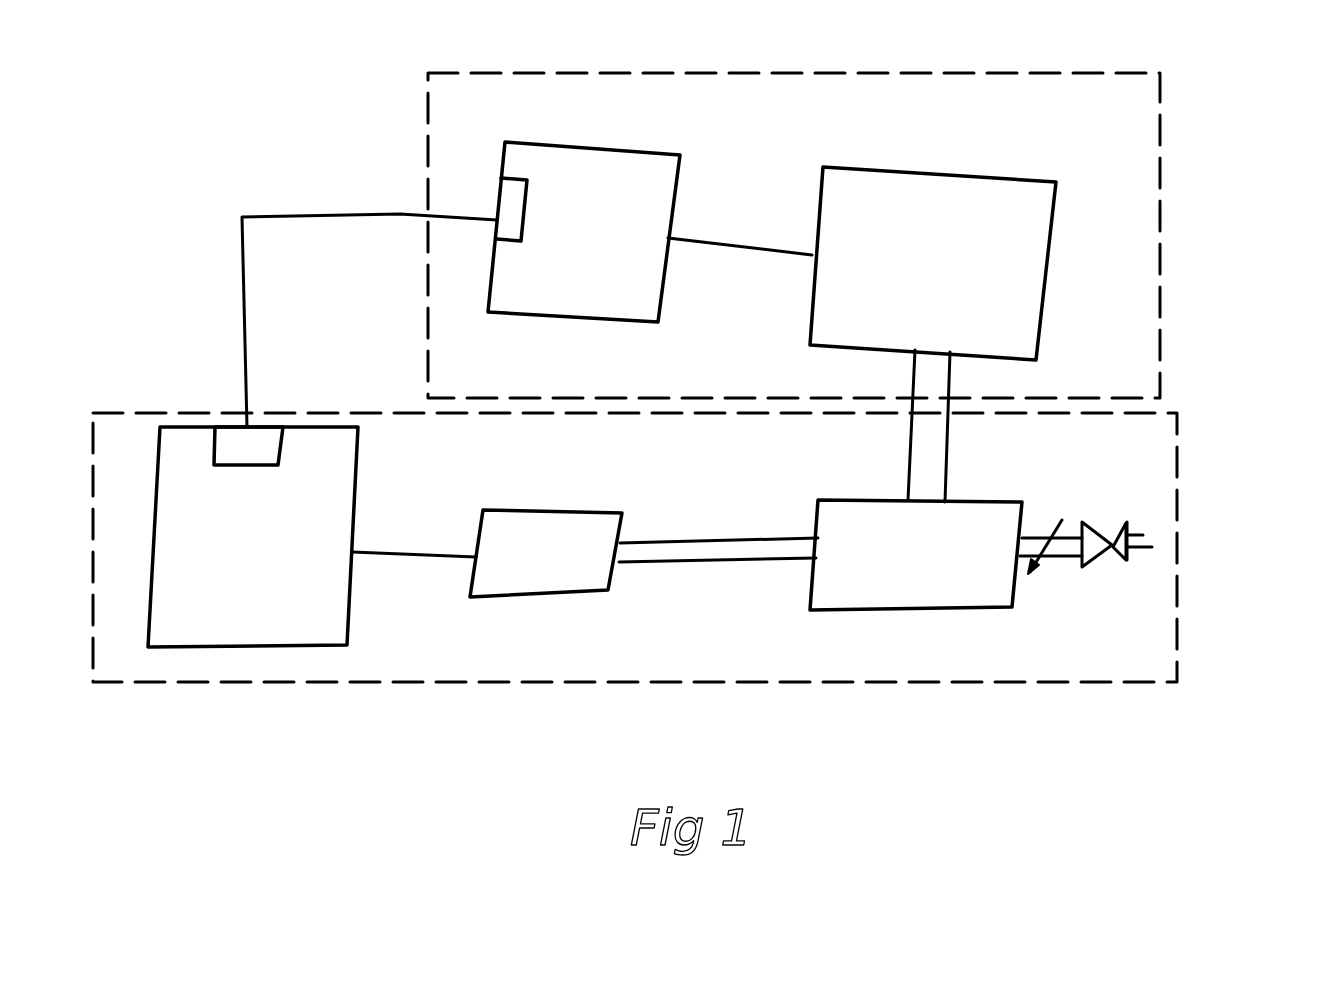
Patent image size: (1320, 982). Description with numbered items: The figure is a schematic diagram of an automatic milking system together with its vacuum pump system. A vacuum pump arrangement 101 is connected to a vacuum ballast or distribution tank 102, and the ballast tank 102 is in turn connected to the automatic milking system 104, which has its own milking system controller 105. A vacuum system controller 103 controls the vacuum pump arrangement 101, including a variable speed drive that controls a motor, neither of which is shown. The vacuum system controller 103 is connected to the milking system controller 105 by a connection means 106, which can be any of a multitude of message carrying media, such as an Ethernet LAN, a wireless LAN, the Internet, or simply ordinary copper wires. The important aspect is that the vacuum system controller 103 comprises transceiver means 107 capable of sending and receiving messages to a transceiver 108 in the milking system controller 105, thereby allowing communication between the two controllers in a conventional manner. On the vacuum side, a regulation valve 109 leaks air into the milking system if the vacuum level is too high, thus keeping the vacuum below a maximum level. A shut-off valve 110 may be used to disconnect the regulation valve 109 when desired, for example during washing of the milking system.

The vacuum pump arrangement 101 is at (547, 593).
The distribution tank 102 is at (913, 610).
The vacuum system controller 103 is at (170, 647).
The automatic milking system 104 is at (1056, 190).
The milking system controller 105 is at (582, 145).
The connection means 106 is at (260, 217).
The transceiver means 107 is at (225, 443).
The transceiver 108 is at (510, 193).
The regulation valve 109 is at (1118, 562).
The shut-off valve 110 is at (1062, 520).